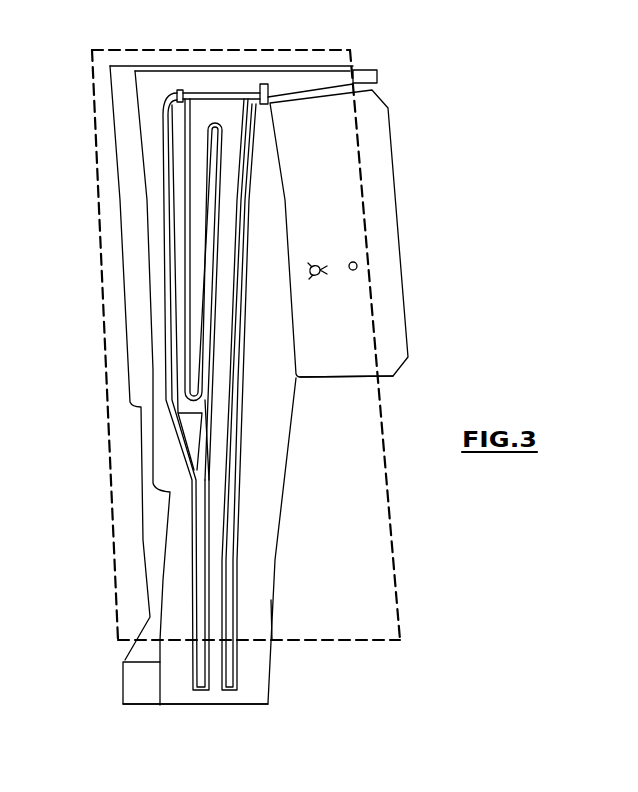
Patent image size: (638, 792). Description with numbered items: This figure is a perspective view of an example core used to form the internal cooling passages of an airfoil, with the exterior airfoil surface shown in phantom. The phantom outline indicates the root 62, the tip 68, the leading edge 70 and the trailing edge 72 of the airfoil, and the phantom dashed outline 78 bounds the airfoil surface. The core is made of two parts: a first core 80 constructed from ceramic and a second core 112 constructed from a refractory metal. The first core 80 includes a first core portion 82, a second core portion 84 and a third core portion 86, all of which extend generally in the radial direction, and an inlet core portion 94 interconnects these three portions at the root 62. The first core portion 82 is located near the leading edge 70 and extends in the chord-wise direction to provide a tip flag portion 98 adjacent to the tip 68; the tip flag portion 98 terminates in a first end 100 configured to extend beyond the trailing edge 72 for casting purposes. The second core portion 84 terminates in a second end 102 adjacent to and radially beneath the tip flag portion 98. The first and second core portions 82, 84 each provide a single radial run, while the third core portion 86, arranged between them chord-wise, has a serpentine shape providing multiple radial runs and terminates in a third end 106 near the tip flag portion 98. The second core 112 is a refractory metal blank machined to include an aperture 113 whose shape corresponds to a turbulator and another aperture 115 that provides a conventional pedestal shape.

The root 62 is at (300, 642).
The tip 68 is at (225, 47).
The leading edge 70 is at (114, 355).
The trailing edge 72 is at (385, 413).
The inner platform 78 is at (400, 612).
The first core 80 is at (280, 628).
The first core portion 82 is at (155, 528).
The second core portion 84 is at (262, 471).
The third core portion 86 is at (217, 545).
The inlet core portion 94 is at (177, 697).
The tip flag portion 98 is at (227, 78).
The first end 100 is at (365, 70).
The second end 102 is at (268, 120).
The third end 106 is at (178, 114).
The second core 112 is at (340, 386).
The aperture 113 is at (315, 292).
The aperture 115 is at (352, 250).